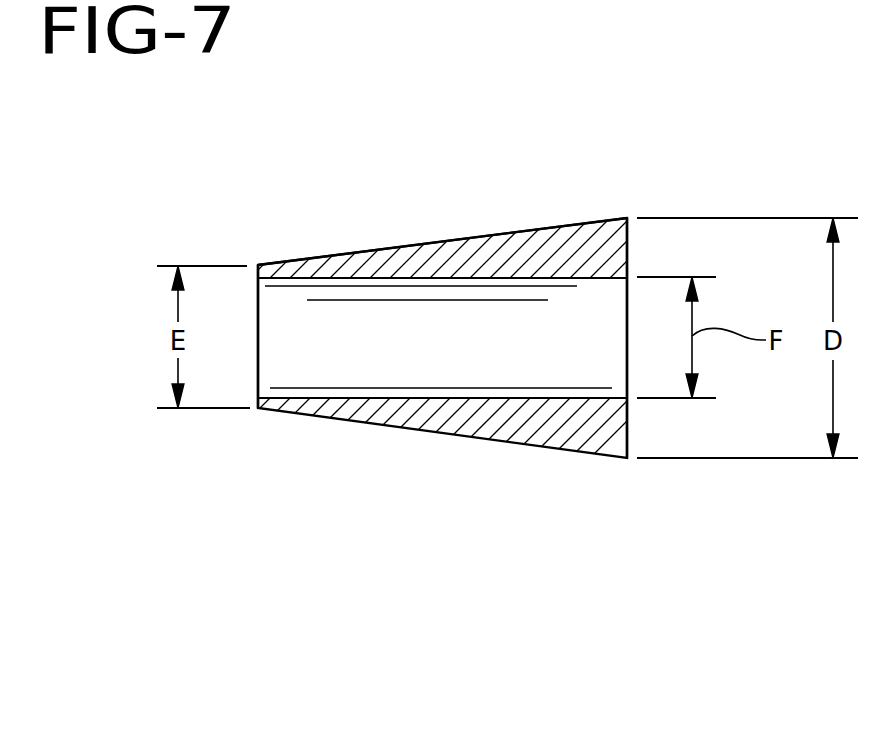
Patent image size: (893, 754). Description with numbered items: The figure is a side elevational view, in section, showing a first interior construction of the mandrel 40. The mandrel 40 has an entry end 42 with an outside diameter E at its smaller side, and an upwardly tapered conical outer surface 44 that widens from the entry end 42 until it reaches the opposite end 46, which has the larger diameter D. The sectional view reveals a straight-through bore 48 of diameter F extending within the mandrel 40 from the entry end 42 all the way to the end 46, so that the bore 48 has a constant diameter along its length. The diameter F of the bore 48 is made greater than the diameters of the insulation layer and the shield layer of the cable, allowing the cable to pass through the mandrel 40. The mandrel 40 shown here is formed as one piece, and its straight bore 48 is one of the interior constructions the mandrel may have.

The mandrel 40 is at (503, 214).
The entry end 42 is at (258, 393).
The tapered conical outer surface 44 is at (442, 242).
The end 46 is at (628, 270).
The straight-through bore 48 is at (427, 398).